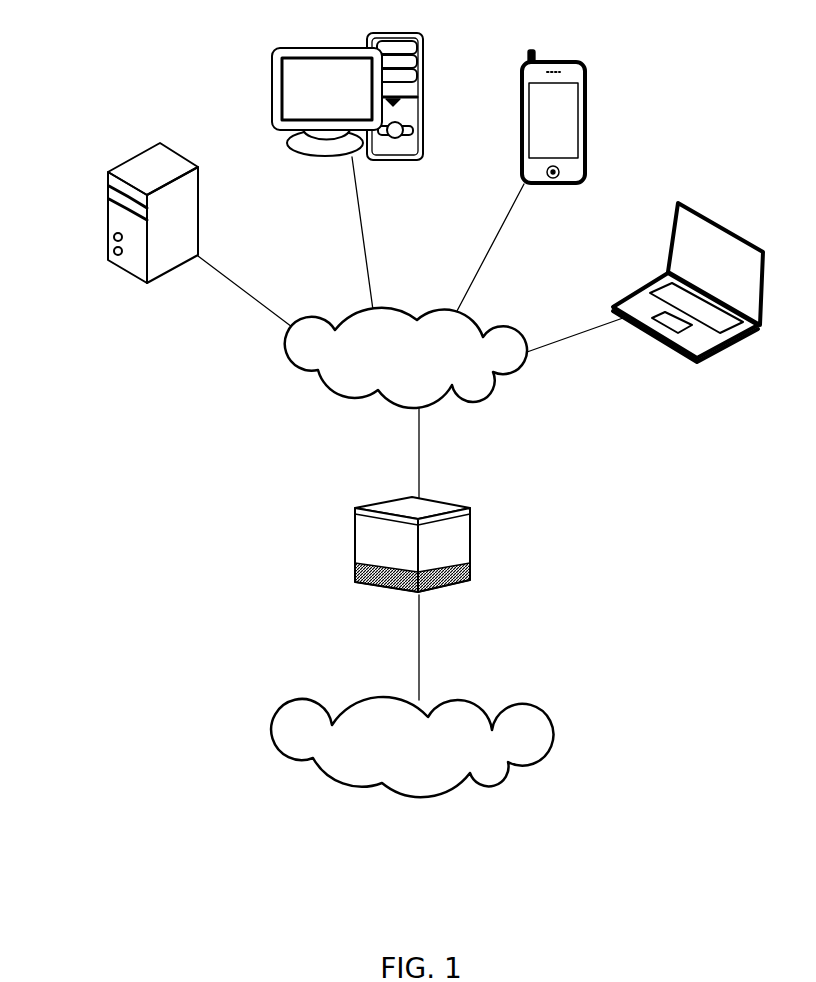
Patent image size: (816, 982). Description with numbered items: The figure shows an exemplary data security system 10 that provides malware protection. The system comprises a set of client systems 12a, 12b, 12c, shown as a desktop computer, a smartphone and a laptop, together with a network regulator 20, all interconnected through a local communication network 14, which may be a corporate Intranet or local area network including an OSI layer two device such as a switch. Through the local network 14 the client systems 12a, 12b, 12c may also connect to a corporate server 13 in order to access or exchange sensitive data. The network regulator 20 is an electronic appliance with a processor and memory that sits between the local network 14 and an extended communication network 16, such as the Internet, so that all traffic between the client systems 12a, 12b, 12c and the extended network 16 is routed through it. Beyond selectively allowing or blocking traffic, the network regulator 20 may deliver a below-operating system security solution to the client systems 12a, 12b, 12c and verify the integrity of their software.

The data security system 10 is at (228, 452).
The client system 12a is at (305, 48).
The client system 12b is at (522, 130).
The client system 12c is at (727, 228).
The corporate server 13 is at (108, 262).
The local communication network 14 is at (325, 396).
The extended communication network 16 is at (376, 697).
The network regulator device 20 is at (470, 505).